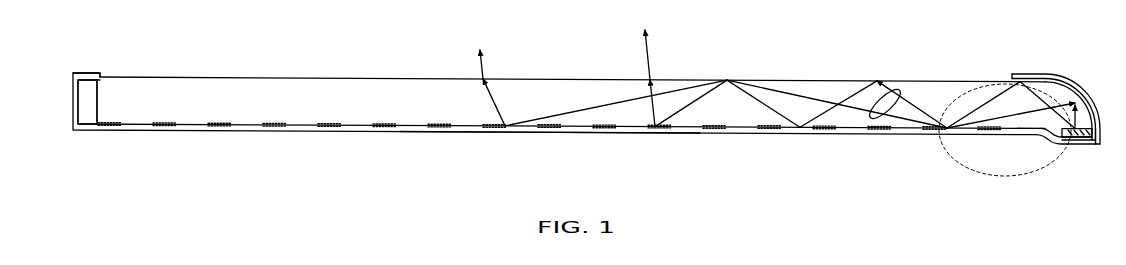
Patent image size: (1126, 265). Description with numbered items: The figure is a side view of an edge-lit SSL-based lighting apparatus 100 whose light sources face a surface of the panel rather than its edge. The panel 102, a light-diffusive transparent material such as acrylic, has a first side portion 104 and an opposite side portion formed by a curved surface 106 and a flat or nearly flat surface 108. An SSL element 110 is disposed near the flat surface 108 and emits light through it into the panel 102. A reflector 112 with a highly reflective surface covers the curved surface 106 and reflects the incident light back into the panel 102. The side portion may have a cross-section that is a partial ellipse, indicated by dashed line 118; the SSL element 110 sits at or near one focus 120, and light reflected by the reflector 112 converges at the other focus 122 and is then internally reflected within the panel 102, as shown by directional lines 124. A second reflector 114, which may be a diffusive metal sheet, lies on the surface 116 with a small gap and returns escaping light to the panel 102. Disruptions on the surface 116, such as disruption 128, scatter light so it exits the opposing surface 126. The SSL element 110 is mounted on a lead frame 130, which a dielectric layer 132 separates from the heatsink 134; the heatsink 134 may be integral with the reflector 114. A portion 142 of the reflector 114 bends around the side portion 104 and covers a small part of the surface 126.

The lighting apparatus 100 is at (787, 22).
The panel 102 is at (257, 103).
The first side portion 104 is at (97, 82).
The curved surface 106 is at (1058, 80).
The flat surface 108 is at (1032, 140).
The SSL element 110 is at (1060, 140).
The reflector 112 is at (1038, 73).
The second reflector 114 is at (536, 134).
The surface 116 is at (574, 128).
The dashed line ellipse 118 is at (957, 164).
The focus 120 is at (1066, 142).
The focus 122 is at (945, 130).
The directional lines 124 is at (898, 93).
The opposing surface 126 is at (565, 79).
The disruption 128 is at (711, 128).
The lead frame 130 is at (1073, 142).
The dielectric layer 132 is at (1096, 146).
The heatsink 134 is at (1085, 141).
The portion 142 is at (75, 72).